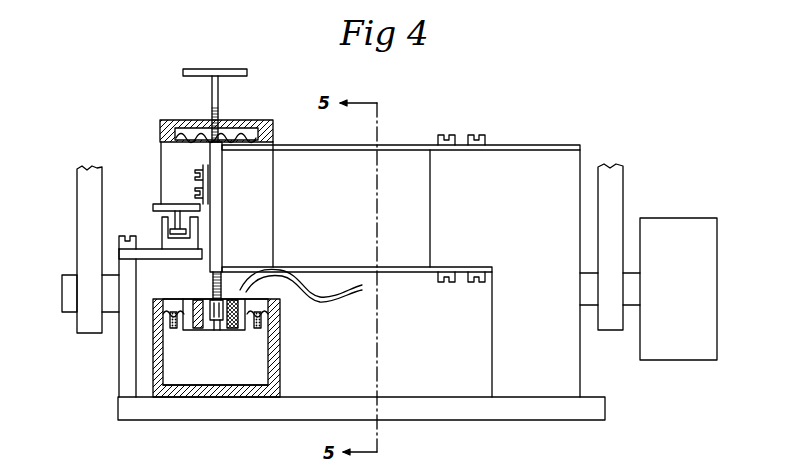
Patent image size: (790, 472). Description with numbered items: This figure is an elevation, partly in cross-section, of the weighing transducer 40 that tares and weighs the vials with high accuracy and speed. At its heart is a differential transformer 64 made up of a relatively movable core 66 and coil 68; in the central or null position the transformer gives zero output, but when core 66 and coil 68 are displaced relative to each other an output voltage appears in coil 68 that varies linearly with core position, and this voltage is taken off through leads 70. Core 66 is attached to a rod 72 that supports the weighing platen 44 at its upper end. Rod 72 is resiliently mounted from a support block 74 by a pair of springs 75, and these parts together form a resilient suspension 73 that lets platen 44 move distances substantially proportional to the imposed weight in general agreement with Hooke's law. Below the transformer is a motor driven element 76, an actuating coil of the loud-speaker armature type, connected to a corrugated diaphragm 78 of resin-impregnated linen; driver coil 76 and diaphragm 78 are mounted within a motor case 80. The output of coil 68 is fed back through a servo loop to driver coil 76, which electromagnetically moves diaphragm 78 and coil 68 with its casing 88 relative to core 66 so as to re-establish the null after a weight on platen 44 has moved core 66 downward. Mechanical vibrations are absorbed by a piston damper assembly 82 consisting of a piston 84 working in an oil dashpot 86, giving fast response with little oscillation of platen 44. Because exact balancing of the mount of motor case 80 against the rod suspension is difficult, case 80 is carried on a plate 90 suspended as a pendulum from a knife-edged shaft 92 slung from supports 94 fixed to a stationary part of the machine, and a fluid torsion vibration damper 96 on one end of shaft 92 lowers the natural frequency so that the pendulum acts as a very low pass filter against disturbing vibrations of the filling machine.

The weighing transducer 40 is at (628, 209).
The weighing platen 44 is at (247, 72).
The differential transformer 64 is at (216, 290).
The core 66 is at (206, 326).
The coil 68 is at (236, 322).
The leads 70 is at (328, 300).
The rod 72 is at (213, 231).
The resilient suspension 73 is at (408, 170).
The support block 74 is at (518, 157).
The springs 75 is at (275, 266).
The motor driven element 76 is at (262, 356).
The corrugated diaphragm 78 is at (168, 316).
The motor case 80 is at (245, 385).
The piston damper assembly 82 is at (162, 234).
The piston 84 is at (170, 226).
The oil dashpot 86 is at (178, 246).
The casing 88 is at (240, 300).
The plate 90 is at (533, 412).
The knife-edged shaft 92 is at (110, 314).
The supports 94 is at (82, 211).
The vibration damper 96 is at (697, 348).